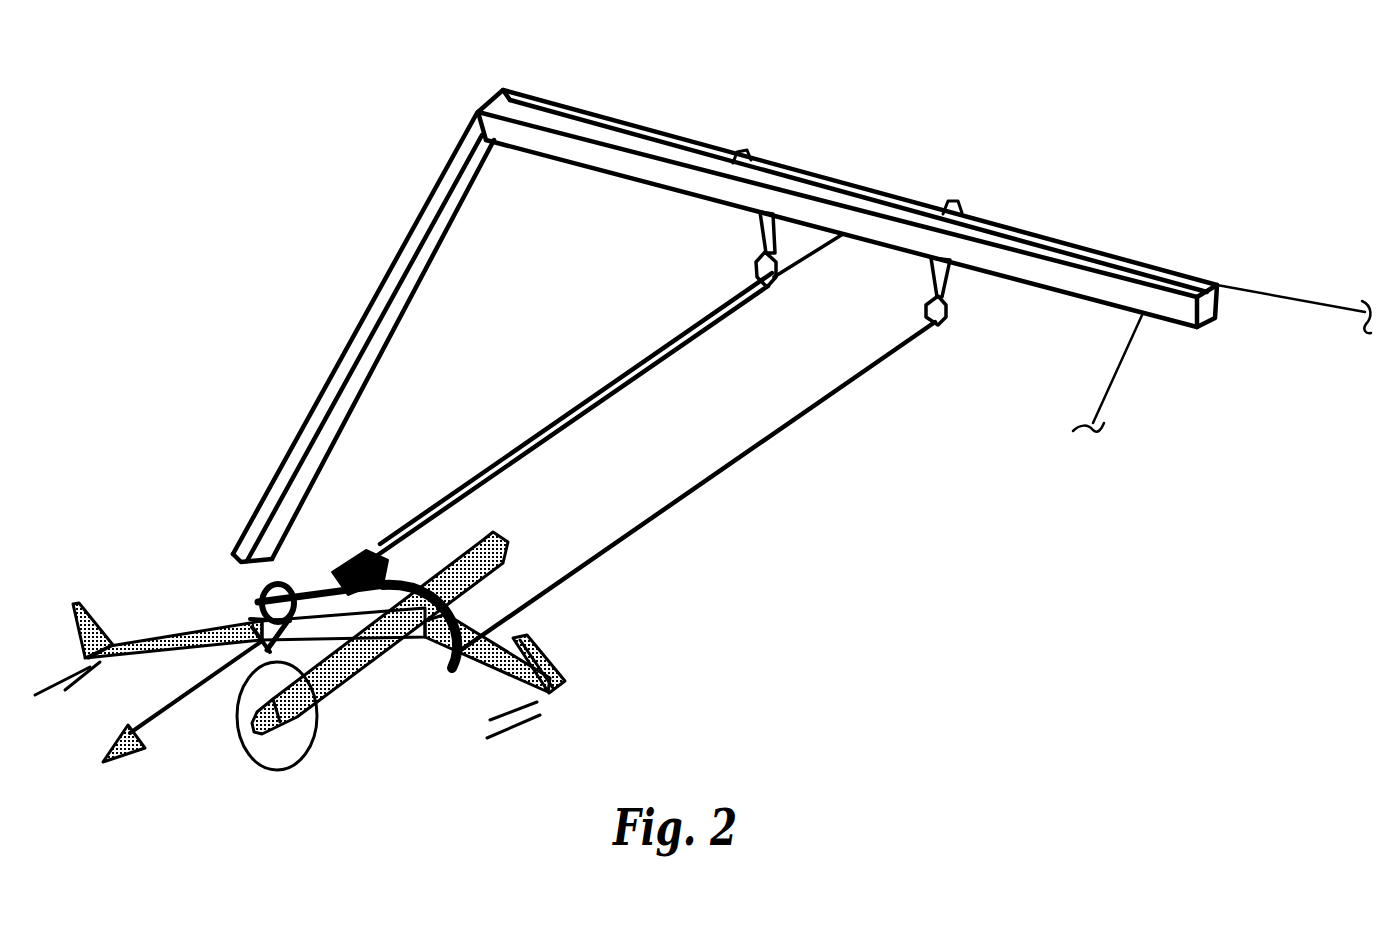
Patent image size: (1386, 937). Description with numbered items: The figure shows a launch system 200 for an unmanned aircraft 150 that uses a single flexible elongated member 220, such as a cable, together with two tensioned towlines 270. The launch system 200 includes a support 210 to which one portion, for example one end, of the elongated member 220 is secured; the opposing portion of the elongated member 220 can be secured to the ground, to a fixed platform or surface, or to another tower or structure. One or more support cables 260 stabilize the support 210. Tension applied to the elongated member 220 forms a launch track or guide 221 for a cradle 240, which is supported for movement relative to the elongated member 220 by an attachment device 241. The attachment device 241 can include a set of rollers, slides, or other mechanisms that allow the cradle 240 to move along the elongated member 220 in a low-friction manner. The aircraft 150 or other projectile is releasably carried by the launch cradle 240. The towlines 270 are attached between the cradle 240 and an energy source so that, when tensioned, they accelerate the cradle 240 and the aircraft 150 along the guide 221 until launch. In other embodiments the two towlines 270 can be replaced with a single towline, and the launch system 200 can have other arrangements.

The launch system 200 is at (190, 290).
The support 210 is at (478, 113).
The elongated member 220 is at (780, 278).
The launch track 221 is at (515, 407).
The cradle 240 is at (372, 551).
The attachment device 241 is at (398, 556).
The support cables 260 is at (1292, 296).
The towlines 270 is at (622, 373).
The unmanned aircraft 150 is at (348, 677).